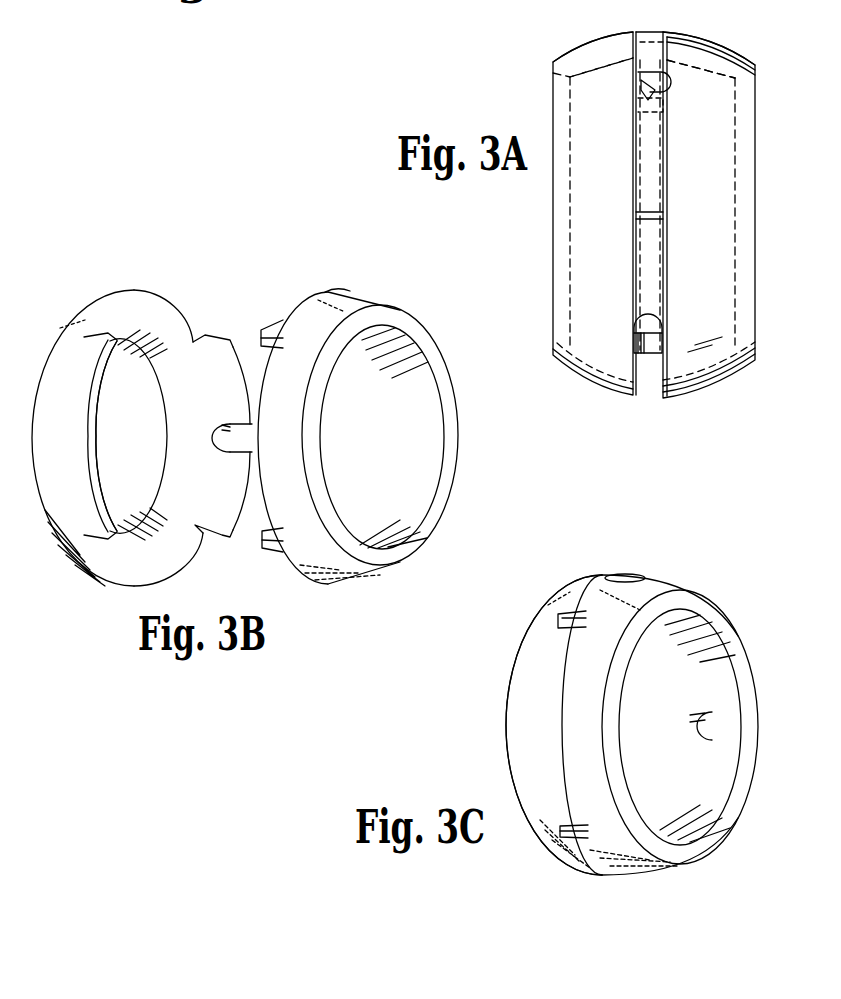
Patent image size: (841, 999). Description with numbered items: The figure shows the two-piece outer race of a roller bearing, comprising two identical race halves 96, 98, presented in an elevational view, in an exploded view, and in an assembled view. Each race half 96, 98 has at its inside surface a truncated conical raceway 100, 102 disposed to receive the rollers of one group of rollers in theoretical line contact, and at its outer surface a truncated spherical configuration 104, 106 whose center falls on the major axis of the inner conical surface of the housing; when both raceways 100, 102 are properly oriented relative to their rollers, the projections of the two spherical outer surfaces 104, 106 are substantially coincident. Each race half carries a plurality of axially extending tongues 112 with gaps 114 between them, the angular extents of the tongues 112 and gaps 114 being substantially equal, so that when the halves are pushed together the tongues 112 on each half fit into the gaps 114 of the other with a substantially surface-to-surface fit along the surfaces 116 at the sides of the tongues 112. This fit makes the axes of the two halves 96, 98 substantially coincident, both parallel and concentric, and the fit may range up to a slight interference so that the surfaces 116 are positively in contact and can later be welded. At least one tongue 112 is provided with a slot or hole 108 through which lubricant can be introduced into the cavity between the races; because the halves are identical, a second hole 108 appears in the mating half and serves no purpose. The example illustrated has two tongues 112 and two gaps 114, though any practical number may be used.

In FIG. 3A, the outer race half 96 is at (607, 230).
In FIG. 3B, the outer race half 96 is at (70, 418).
In FIG. 3C, the outer race half 96 is at (541, 714).
In FIG. 3A, the outer race half 98 is at (710, 277).
In FIG. 3B, the outer race half 98 is at (297, 417).
In FIG. 3C, the outer race half 98 is at (593, 714).
In FIG. 3A, the truncated conical raceway 100 is at (607, 68).
In FIG. 3A, the truncated conical raceway 102 is at (693, 68).
In FIG. 3A, the spherical outer surface 104 is at (580, 48).
In FIG. 3A, the spherical outer surface 106 is at (727, 31).
In FIG. 3A, the lubricant hole 108 is at (647, 88).
In FIG. 3B, the tongue 112 is at (82, 455).
In FIG. 3C, the tongue 112 is at (580, 595).
In FIG. 3B, the gap 114 is at (163, 303).
In FIG. 3C, the gap 114 is at (568, 767).
In FIG. 3A, the side surface of tongue 116 is at (663, 208).